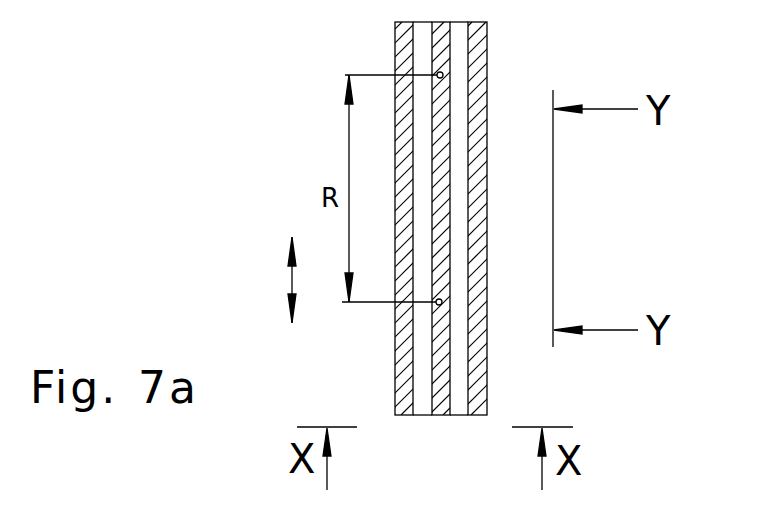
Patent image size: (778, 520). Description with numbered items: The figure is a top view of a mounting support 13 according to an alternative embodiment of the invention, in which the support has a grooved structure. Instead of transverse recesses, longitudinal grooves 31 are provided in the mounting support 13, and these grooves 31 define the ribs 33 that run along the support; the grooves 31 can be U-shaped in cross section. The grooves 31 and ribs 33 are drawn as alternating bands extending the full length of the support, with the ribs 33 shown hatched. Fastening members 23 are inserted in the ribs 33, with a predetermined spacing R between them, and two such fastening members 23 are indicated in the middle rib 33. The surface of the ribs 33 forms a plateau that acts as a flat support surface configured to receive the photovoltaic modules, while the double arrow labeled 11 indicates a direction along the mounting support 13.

The mounting support 13 is at (393, 214).
The fastening members 23 is at (443, 74).
The longitudinal grooves 31 is at (420, 136).
The ribs 33 is at (433, 360).
The direction of movement 11 is at (290, 276).